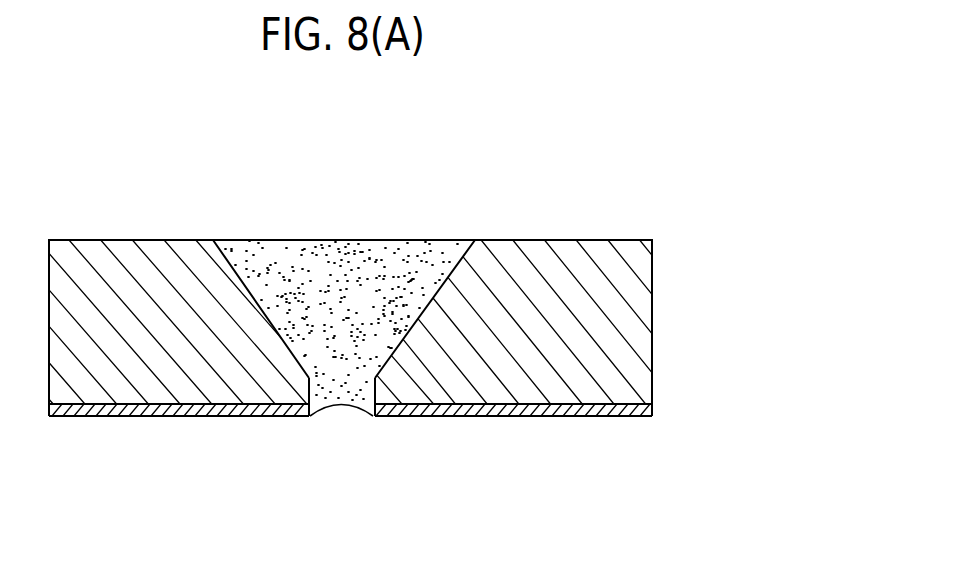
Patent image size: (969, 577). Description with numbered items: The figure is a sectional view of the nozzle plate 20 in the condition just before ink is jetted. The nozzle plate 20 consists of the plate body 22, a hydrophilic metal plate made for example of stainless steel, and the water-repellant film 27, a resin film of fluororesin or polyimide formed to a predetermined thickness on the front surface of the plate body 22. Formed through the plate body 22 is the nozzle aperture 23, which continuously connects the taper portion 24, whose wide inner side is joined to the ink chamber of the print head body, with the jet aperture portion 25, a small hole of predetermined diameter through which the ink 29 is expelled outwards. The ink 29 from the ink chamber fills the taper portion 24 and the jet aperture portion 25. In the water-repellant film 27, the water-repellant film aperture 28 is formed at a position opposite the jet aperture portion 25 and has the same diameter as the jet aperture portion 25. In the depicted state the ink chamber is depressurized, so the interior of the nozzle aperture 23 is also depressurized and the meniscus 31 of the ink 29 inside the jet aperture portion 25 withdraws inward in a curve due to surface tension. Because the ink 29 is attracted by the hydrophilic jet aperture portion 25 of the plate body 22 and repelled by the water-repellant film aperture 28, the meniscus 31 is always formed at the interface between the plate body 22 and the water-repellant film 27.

The nozzle plate 20 is at (472, 88).
The plate body 22 is at (628, 282).
The nozzle aperture 23 is at (402, 270).
The taper portion 24 is at (443, 278).
The jet aperture portion 25 is at (310, 378).
The water-repellant film 27 is at (97, 412).
The water-repellant film aperture 28 is at (362, 417).
The ink 29 is at (354, 252).
The meniscus 31 is at (333, 410).